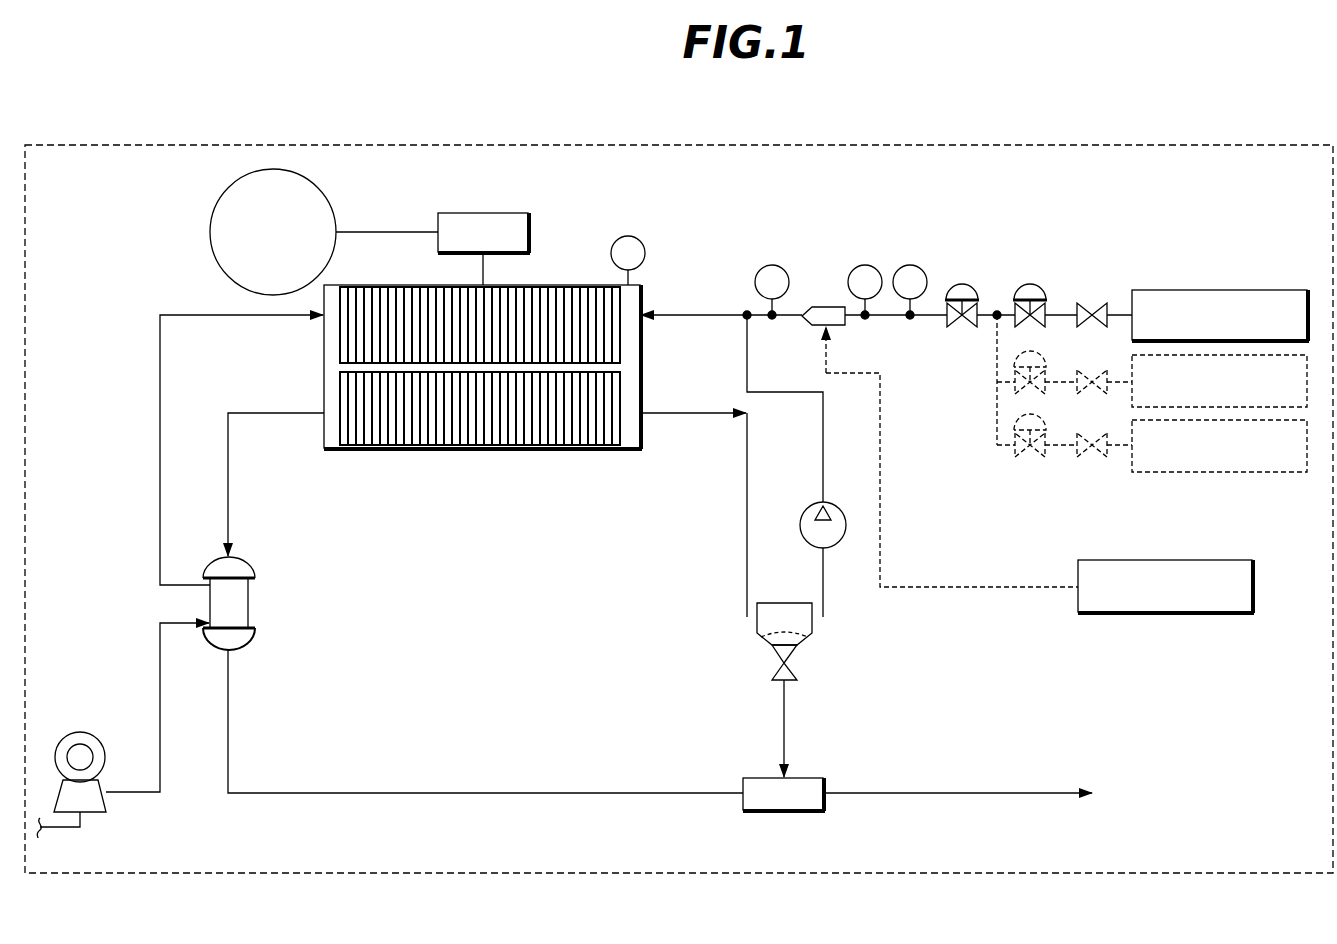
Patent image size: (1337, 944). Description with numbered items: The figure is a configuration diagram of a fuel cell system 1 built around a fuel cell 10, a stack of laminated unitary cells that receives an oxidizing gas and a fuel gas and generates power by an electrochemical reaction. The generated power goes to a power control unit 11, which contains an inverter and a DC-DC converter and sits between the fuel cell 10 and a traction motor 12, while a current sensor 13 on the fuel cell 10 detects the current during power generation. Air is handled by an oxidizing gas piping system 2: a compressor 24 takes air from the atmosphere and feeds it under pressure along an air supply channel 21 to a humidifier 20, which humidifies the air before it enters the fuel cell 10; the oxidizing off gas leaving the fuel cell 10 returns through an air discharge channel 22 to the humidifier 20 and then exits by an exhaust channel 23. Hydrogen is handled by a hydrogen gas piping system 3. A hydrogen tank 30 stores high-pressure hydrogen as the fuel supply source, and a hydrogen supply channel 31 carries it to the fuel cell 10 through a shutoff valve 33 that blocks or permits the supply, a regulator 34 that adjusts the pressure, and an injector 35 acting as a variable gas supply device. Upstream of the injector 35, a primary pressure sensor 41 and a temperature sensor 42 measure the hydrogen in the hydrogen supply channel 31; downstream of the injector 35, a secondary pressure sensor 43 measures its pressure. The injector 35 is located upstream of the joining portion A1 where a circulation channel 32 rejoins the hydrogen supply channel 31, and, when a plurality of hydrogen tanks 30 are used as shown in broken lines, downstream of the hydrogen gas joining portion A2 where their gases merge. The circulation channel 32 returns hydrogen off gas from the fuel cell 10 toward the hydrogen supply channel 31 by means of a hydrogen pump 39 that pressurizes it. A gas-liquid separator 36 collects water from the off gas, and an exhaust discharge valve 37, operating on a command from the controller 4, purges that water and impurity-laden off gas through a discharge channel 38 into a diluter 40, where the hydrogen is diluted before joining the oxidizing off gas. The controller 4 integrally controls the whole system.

The fuel cell system 1 is at (540, 144).
The oxidizing gas piping system 2 is at (272, 556).
The hydrogen gas piping system 3 is at (730, 603).
The controller 4 is at (1164, 560).
The fuel cell 10 is at (586, 449).
The power control unit 11 is at (529, 240).
The traction motor 12 is at (211, 240).
The current sensor 13 is at (634, 238).
The humidifier 20 is at (249, 612).
The air supply channel 21 is at (160, 528).
The air discharge channel 22 is at (229, 513).
The exhaust channel 23 is at (680, 793).
The compressor 24 is at (90, 733).
The hydrogen tank 30 is at (1250, 290).
The hydrogen supply channel 31 is at (698, 313).
The circulation channel 32 is at (746, 565).
The shutoff valve 33 is at (1088, 304).
The regulator 34 is at (963, 288).
The injector 35 is at (814, 306).
The gas-liquid separator 36 is at (768, 603).
The exhaust discharge valve 37 is at (773, 665).
The discharge channel 38 is at (785, 735).
The hydrogen pump 39 is at (812, 506).
The diluter 40 is at (824, 792).
The primary pressure sensor 41 is at (868, 265).
The temperature sensor 42 is at (913, 265).
The secondary pressure sensor 43 is at (778, 265).
The joining portion A1 is at (745, 316).
The hydrogen gas joining portion A2 is at (997, 317).